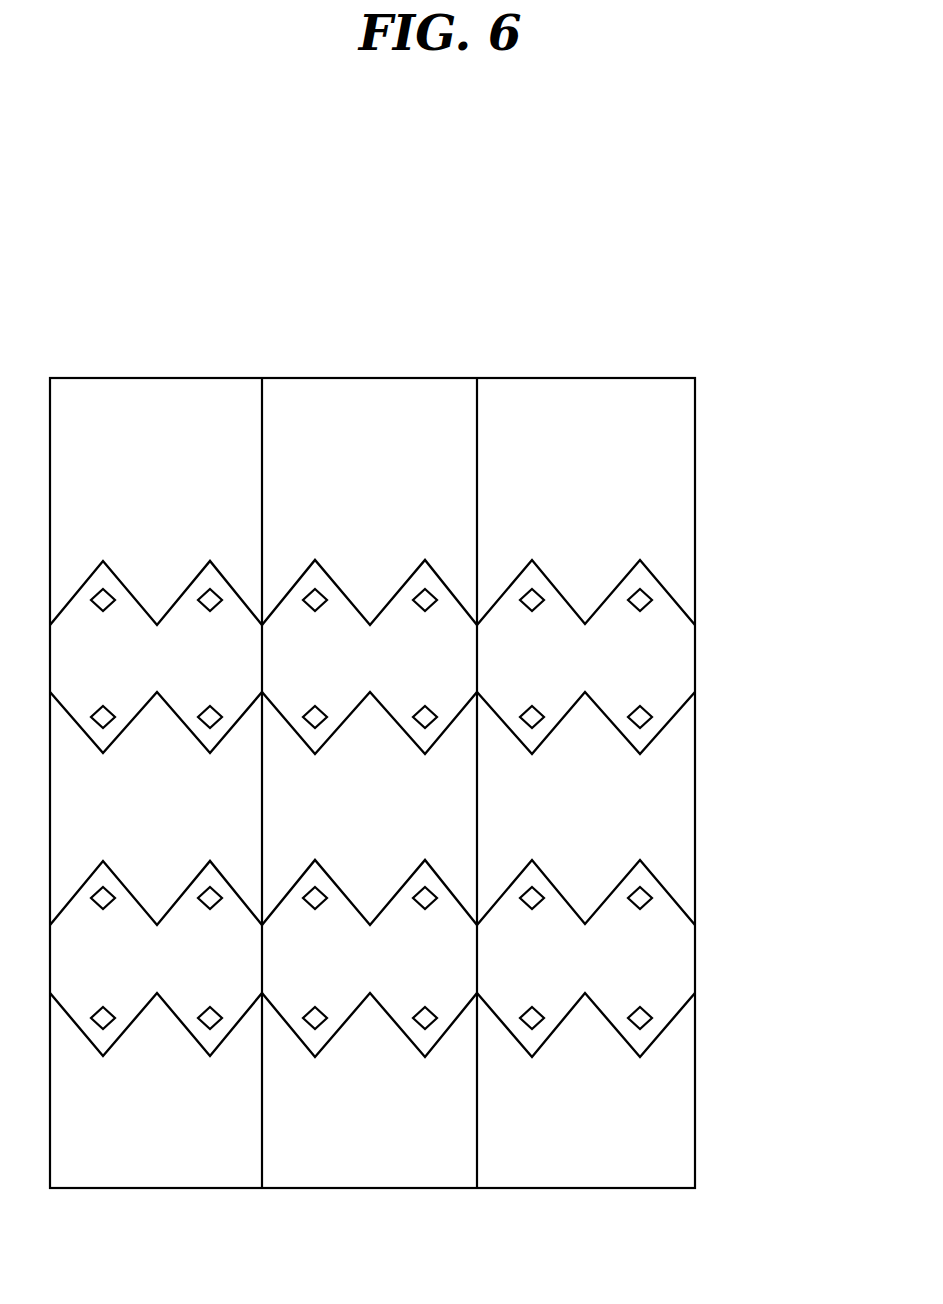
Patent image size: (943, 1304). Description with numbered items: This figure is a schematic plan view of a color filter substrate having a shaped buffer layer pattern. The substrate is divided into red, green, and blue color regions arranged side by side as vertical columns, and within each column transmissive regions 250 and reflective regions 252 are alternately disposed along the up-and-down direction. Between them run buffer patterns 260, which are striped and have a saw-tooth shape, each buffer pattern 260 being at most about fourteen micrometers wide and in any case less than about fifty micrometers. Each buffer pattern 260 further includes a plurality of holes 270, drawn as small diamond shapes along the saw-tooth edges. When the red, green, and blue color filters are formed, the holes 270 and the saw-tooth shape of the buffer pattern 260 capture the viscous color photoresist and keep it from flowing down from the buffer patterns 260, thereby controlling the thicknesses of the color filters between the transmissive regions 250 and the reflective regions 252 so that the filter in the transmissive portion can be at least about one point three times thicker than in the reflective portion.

The transmissive region 250 is at (668, 486).
The buffer pattern 260 is at (668, 589).
The reflective region 252 is at (668, 659).
The hole 270 is at (650, 1020).